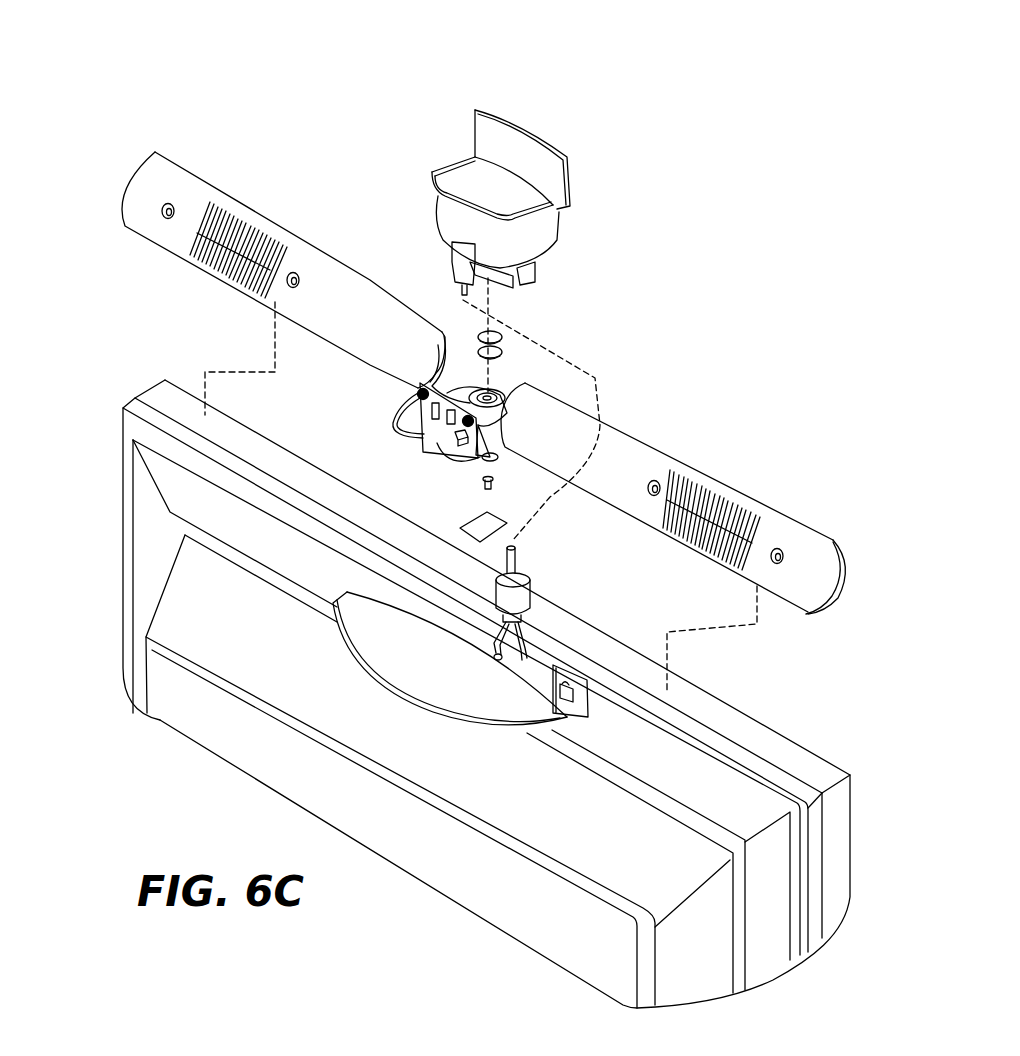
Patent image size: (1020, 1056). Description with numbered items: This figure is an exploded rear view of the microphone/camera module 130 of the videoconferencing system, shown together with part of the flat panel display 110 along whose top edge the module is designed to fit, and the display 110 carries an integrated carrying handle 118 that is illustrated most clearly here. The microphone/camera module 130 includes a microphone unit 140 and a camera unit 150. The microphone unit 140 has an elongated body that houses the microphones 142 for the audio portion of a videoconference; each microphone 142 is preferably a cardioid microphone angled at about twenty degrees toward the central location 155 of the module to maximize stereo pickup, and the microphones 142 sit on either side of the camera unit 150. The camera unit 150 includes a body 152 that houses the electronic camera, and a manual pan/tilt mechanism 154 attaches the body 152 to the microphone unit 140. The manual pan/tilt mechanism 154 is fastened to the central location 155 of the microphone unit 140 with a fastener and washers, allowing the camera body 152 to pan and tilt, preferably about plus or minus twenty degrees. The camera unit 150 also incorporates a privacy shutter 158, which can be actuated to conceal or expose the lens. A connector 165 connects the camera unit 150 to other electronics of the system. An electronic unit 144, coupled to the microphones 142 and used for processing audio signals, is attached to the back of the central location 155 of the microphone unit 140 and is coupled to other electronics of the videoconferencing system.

The display 110 is at (121, 487).
The integrated carrying handle 118 is at (377, 677).
The microphone/camera module 130 is at (131, 135).
The microphone unit 140 is at (806, 522).
The microphones 142 is at (253, 232).
The electronic unit 144 is at (430, 450).
The camera unit 150 is at (480, 215).
The body 152 is at (435, 167).
The manual pan/tilt mechanism 154 is at (530, 282).
The central location 155 is at (514, 367).
The privacy shutter 158 is at (532, 123).
The connector 165 is at (528, 566).